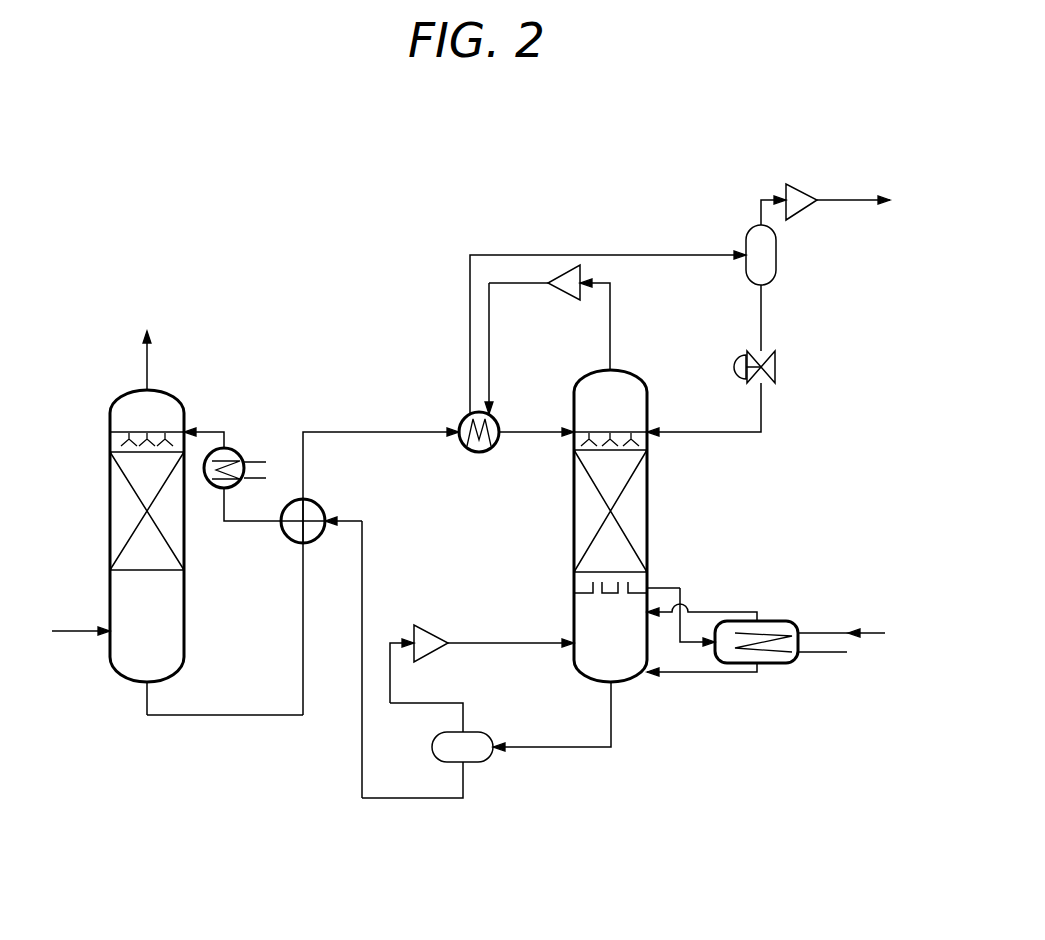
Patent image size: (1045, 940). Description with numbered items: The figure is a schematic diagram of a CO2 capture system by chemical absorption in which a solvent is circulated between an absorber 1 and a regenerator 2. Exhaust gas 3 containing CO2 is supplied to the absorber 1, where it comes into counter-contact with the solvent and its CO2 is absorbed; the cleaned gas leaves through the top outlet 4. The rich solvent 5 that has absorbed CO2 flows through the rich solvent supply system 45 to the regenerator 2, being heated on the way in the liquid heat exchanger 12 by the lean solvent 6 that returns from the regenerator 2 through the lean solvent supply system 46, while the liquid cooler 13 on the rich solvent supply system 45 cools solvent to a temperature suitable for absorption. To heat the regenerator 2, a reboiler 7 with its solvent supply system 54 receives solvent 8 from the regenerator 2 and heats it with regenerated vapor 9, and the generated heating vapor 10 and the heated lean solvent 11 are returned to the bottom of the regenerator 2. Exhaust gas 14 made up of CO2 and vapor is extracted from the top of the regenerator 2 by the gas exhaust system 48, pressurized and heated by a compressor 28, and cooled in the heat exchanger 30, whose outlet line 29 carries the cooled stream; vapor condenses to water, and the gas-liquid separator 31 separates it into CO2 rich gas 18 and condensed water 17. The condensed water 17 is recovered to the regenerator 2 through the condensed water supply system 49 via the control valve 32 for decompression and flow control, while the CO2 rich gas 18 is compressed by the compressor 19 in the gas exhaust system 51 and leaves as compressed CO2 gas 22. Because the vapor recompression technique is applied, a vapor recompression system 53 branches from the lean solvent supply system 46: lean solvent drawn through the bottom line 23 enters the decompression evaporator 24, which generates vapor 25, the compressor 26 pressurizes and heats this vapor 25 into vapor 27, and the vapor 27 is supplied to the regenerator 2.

The absorber 1 is at (110, 498).
The regenerator 2 is at (571, 392).
The exhaust gas 3 is at (75, 631).
The overhead gas line 4 is at (147, 360).
The rich solvent 5 is at (378, 432).
The lean solvent 6 is at (395, 798).
The reboiler 7 is at (773, 620).
The solvent 8 is at (663, 588).
The regenerated vapor 9 is at (885, 633).
The heating vapor 10 is at (725, 612).
The heated lean solvent 11 is at (690, 672).
The liquid heat exchanger 12 is at (320, 505).
The liquid cooler 13 is at (232, 450).
The exhaust gas 14 is at (611, 355).
The condensed water 17 is at (763, 410).
The CO2 rich gas 18 is at (758, 226).
The compressor 19 is at (793, 184).
The compressed CO2 gas 22 is at (852, 200).
The bottom liquid line 23 is at (545, 747).
The decompression evaporator 24 is at (470, 762).
The vapor 25 is at (405, 703).
The compressor 26 is at (426, 625).
The vapor 27 is at (500, 643).
The compressor 28 is at (583, 268).
The compressed vapor line 29 is at (492, 395).
The heat exchanger 30 is at (463, 417).
The gas-liquid separator 31 is at (778, 258).
The control valve 32 is at (778, 373).
The rich solvent supply system 45 is at (200, 715).
The lean solvent supply system 46 is at (360, 748).
The gas exhaust system 48 is at (611, 318).
The condensed water supply system 49 is at (763, 320).
The gas exhaust system 51 is at (752, 218).
The vapor recompression system 53 is at (432, 703).
The solvent supply system 54 is at (682, 586).